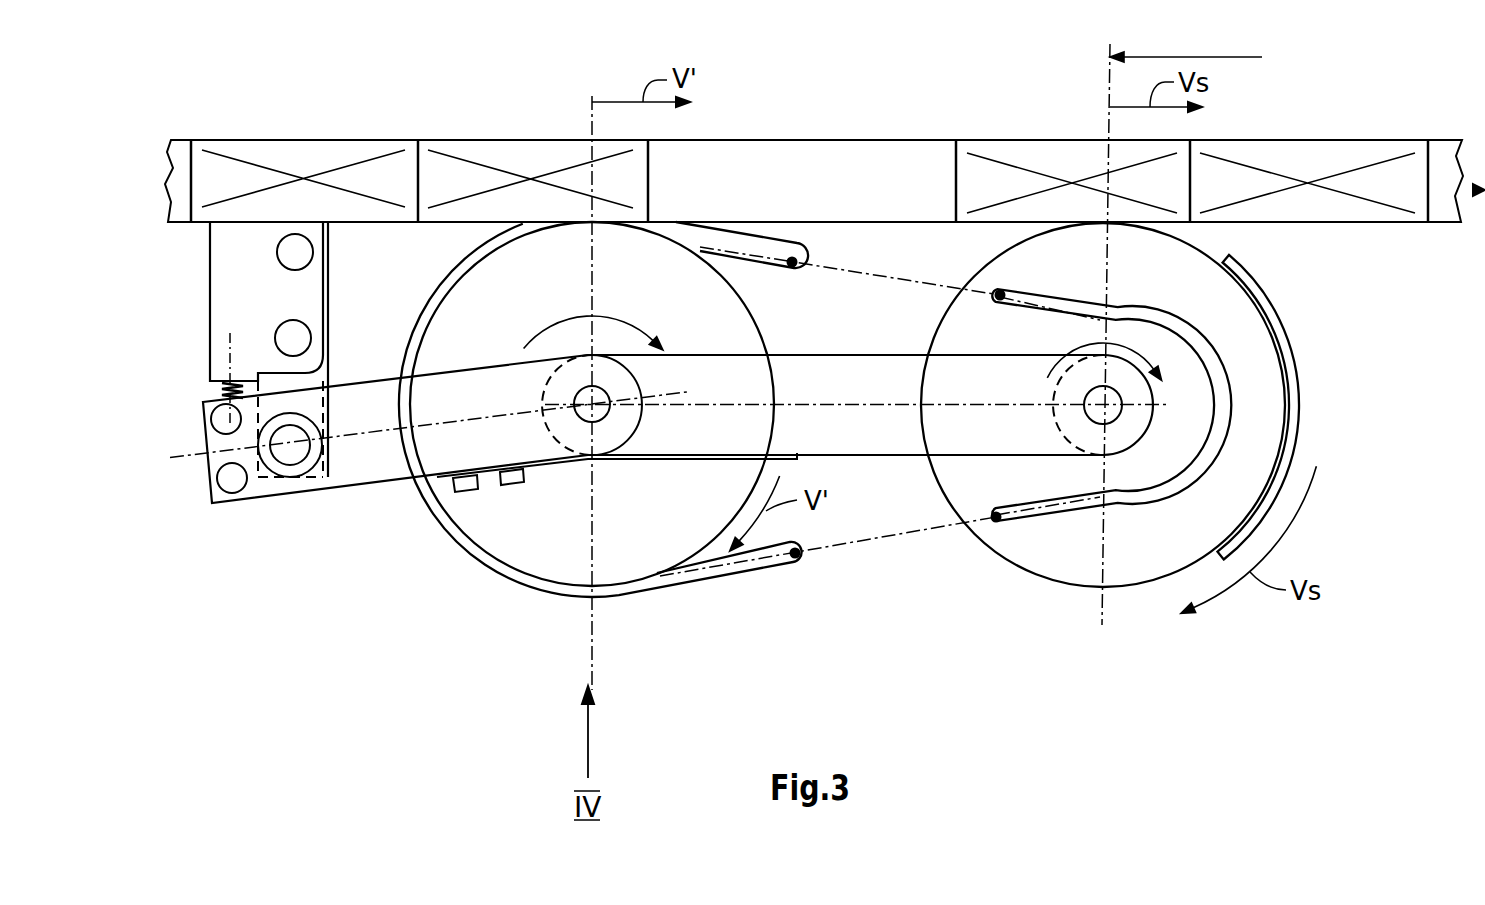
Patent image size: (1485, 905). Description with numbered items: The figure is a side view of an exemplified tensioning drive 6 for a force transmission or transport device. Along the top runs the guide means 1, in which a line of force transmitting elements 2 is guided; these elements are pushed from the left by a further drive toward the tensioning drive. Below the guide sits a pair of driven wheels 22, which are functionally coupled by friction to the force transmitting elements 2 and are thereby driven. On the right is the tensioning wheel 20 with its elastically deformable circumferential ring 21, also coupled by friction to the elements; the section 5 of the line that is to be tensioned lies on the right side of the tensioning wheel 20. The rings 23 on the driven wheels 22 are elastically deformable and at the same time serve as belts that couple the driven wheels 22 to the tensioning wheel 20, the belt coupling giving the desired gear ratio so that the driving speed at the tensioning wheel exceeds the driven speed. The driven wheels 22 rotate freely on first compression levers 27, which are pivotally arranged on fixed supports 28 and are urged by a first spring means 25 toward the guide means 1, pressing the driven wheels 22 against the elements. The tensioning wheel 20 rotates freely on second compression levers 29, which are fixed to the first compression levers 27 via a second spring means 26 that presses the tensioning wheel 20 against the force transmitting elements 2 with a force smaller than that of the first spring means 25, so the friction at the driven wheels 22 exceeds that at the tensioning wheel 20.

The guide means 1 is at (746, 222).
The force transmitting elements 2 is at (1172, 197).
The section 5 is at (1203, 57).
The tensioning drive 6 is at (717, 598).
The tensioning wheel 20 is at (1212, 535).
The elastically deformable circumferential ring 21 is at (1295, 438).
The driven wheels 22 is at (507, 538).
The rings 23 is at (773, 562).
The first spring means 25 is at (192, 391).
The second spring means 26 is at (654, 464).
The first compression levers 27 is at (347, 467).
The fixed supports 28 is at (264, 306).
The second compression levers 29 is at (986, 441).